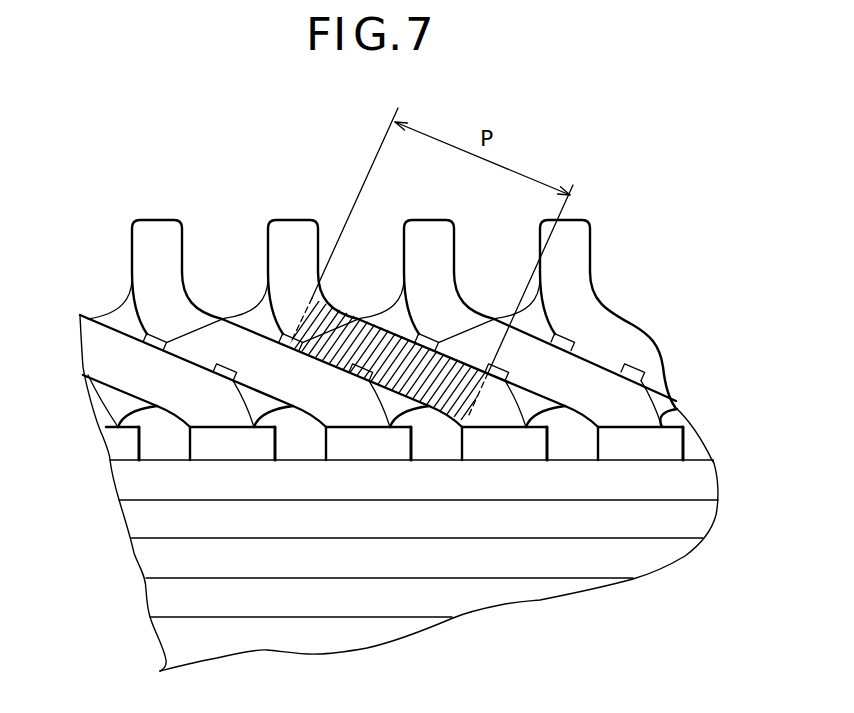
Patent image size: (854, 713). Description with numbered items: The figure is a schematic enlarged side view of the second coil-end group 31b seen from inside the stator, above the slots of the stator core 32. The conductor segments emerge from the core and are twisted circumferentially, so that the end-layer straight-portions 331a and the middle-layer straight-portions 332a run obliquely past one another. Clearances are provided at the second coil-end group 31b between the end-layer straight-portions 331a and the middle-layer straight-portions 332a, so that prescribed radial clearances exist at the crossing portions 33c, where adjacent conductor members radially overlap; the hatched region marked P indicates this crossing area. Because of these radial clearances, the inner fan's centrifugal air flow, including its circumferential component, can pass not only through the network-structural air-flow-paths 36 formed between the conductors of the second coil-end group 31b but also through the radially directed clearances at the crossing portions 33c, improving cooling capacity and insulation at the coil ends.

The second coil-end group 31b is at (629, 176).
The stator core 32 is at (147, 557).
The crossing portions 33c is at (340, 327).
The network-structural air-flow-paths 36 is at (213, 370).
The end-layer straight-portion 331a is at (593, 293).
The middle-layer straight-portion 332a is at (117, 320).